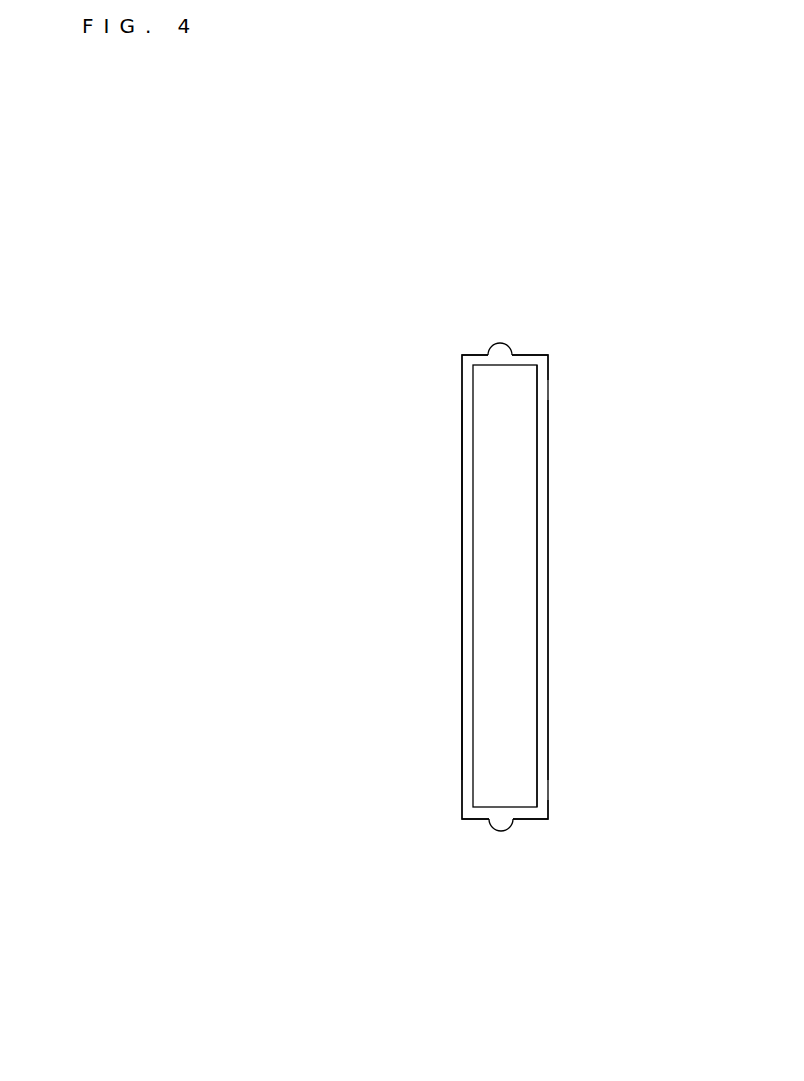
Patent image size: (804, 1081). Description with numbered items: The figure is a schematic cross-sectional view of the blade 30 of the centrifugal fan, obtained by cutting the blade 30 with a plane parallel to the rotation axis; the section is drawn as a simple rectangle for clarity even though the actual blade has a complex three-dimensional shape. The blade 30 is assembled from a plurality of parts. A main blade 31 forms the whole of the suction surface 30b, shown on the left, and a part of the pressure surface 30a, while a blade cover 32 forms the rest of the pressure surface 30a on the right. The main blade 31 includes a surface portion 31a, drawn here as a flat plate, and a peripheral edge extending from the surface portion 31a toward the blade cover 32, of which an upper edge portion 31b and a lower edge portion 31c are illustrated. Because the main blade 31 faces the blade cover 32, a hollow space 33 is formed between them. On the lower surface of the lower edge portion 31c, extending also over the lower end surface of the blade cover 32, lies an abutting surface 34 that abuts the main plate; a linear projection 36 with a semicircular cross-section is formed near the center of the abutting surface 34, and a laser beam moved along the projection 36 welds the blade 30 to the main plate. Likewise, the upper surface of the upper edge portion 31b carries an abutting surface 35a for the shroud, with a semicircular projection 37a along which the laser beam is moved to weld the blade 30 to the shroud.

The blade 30 is at (600, 300).
The pressure surface 30a is at (571, 636).
The suction surface 30b is at (446, 655).
The main blade 31 is at (466, 502).
The surface portion 31a is at (467, 558).
The upper edge portion 31b is at (524, 358).
The lower edge portion 31c is at (523, 817).
The blade cover 32 is at (543, 553).
The hollow space 33 is at (510, 718).
The abutting surface 34 is at (478, 822).
The abutting surface 35a is at (477, 355).
The projection 36 is at (500, 829).
The projection 37a is at (501, 347).